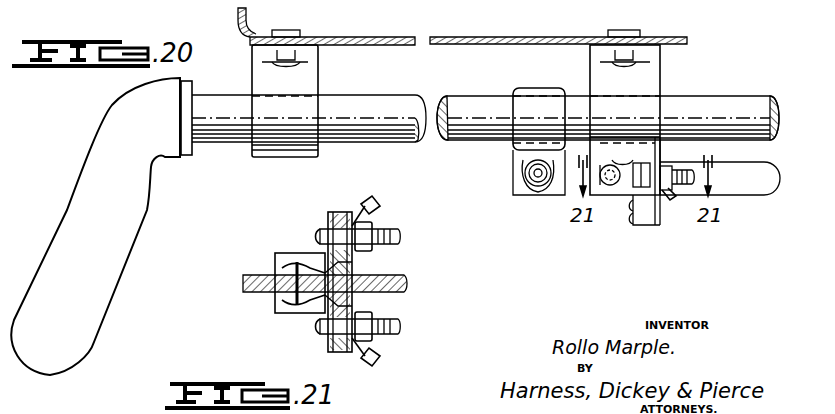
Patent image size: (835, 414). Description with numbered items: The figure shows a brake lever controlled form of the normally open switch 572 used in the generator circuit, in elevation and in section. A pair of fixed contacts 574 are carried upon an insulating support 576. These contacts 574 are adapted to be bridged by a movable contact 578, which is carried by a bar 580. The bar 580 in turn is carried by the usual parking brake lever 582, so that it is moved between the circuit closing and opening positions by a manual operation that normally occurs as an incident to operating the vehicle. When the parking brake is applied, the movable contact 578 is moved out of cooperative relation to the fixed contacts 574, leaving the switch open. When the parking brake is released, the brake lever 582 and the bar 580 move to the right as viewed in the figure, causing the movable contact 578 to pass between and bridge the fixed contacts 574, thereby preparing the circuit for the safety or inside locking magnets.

In FIG. 20, the normally open switch 572 is at (628, 118).
In FIG. 21, the normally open switch 572 is at (365, 262).
In FIG. 21, the fixed contacts 574 is at (310, 258).
In FIG. 21, the insulating support 576 is at (357, 272).
In FIG. 21, the movable contact 578 is at (280, 295).
In FIG. 21, the bar 580 is at (410, 290).
In FIG. 20, the parking brake lever 582 is at (455, 130).